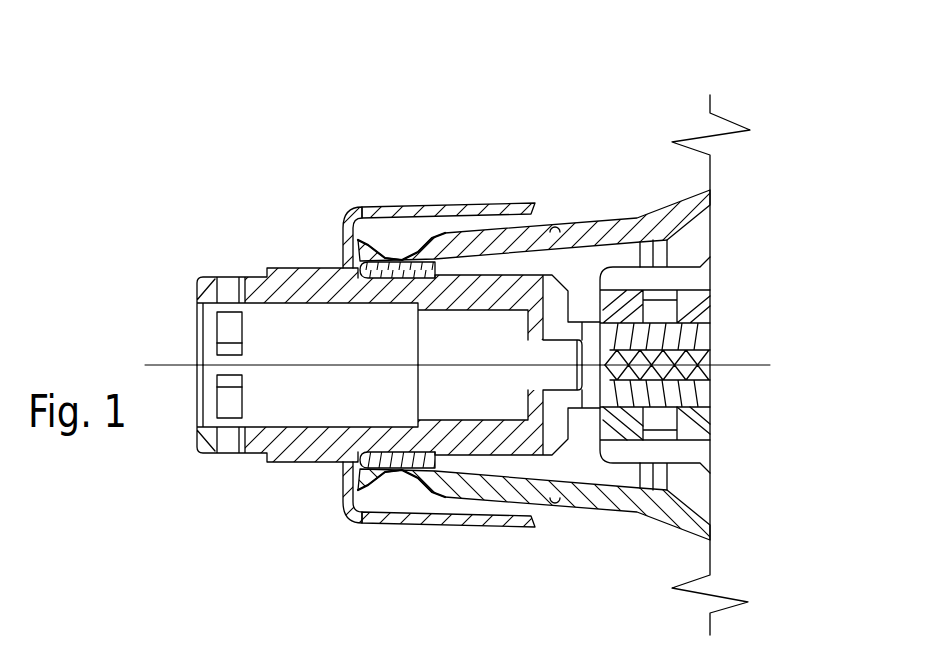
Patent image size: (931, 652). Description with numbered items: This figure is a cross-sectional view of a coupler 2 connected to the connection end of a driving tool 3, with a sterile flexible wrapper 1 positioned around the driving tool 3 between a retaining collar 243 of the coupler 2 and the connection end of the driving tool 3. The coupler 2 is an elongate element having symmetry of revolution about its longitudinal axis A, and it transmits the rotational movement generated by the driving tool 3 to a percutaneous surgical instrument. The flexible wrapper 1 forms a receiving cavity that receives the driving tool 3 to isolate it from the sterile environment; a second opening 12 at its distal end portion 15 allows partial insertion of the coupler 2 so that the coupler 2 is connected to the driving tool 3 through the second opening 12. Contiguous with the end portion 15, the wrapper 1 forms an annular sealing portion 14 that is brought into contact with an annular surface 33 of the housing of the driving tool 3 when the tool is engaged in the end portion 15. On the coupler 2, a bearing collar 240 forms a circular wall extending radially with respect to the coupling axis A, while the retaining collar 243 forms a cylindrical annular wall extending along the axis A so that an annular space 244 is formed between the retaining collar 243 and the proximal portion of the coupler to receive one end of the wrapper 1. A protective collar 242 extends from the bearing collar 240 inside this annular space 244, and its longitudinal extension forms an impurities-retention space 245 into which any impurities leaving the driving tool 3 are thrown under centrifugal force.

The flexible wrapper 1 is at (673, 200).
The coupler 2 is at (280, 200).
The driving tool 3 is at (697, 208).
The second opening 12 is at (352, 470).
The annular sealing portion 14 is at (592, 222).
The end portion 15 is at (372, 258).
The annular surface 33 is at (567, 228).
The bearing collar 240 is at (344, 232).
The protective collar 242 is at (358, 238).
The retaining collar 243 is at (487, 205).
The annular space 244 is at (377, 522).
The impurities-retention space 245 is at (344, 465).
The longitudinal axis A is at (765, 366).